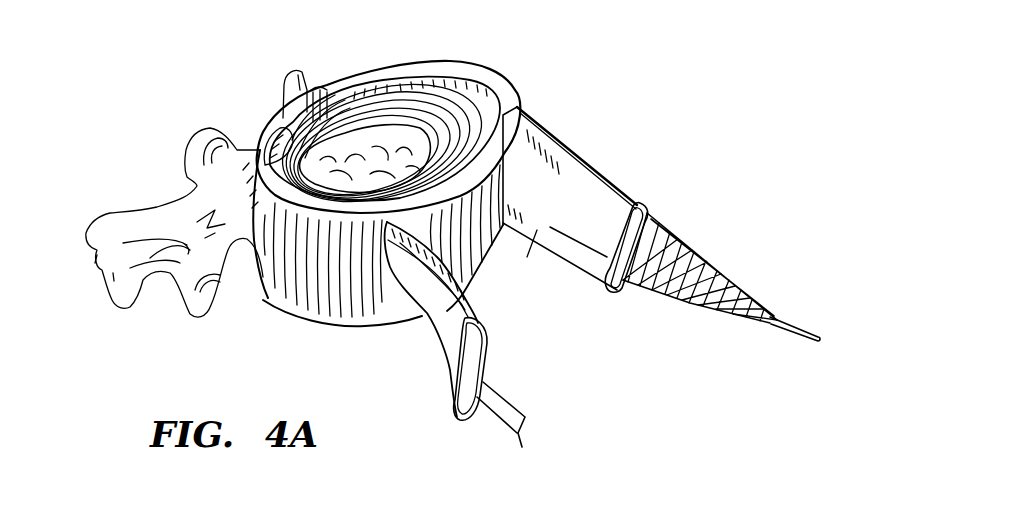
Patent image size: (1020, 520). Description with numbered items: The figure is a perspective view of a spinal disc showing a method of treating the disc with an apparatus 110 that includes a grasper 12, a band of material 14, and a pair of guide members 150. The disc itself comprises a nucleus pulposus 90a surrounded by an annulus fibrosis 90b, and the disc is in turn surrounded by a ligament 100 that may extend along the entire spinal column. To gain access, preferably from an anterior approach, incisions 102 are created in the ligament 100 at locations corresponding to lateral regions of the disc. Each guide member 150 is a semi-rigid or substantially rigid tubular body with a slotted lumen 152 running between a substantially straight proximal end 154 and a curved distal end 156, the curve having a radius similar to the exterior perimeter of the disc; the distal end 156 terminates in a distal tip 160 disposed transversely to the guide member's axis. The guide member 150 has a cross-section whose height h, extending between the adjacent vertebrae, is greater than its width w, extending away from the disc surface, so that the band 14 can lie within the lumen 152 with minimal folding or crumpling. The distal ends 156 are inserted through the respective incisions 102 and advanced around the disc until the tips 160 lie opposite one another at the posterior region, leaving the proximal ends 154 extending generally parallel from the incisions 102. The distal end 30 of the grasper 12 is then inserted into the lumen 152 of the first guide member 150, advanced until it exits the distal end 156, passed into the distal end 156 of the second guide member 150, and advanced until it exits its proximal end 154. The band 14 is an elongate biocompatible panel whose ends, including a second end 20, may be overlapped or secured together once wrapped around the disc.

The ligament 100 is at (268, 300).
The incisions 102 is at (520, 226).
The nucleus pulposus 90a is at (397, 135).
The annulus fibrosis 90b is at (377, 105).
The distal end 156 is at (340, 82).
The distal end 30 is at (287, 117).
The distal tip 160 is at (290, 108).
The apparatus 110 is at (707, 158).
The guide members 150 is at (592, 155).
The proximal end 154 is at (613, 180).
The height h is at (558, 147).
The slotted lumen 152 is at (657, 217).
The band of material 14 is at (716, 244).
The second end 20 is at (748, 312).
The grasper 12 is at (515, 389).
The width w is at (447, 343).